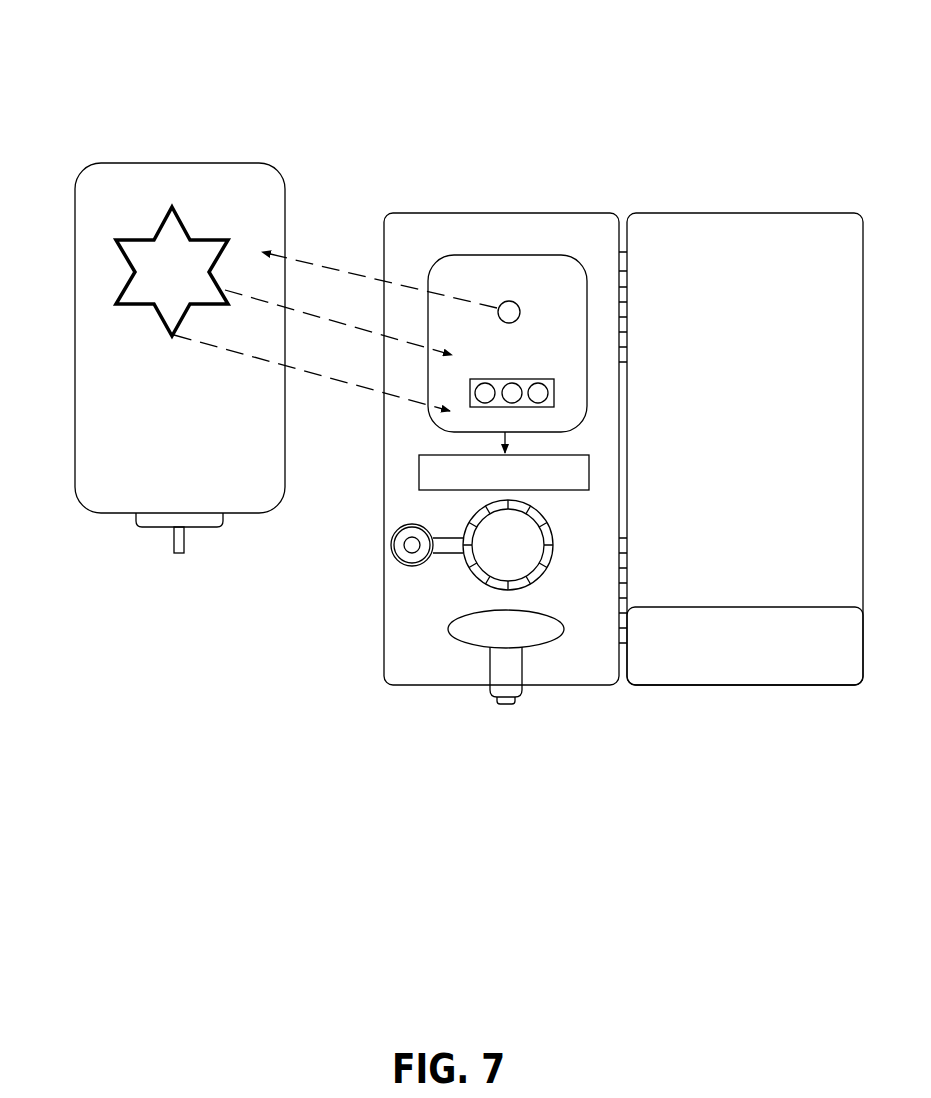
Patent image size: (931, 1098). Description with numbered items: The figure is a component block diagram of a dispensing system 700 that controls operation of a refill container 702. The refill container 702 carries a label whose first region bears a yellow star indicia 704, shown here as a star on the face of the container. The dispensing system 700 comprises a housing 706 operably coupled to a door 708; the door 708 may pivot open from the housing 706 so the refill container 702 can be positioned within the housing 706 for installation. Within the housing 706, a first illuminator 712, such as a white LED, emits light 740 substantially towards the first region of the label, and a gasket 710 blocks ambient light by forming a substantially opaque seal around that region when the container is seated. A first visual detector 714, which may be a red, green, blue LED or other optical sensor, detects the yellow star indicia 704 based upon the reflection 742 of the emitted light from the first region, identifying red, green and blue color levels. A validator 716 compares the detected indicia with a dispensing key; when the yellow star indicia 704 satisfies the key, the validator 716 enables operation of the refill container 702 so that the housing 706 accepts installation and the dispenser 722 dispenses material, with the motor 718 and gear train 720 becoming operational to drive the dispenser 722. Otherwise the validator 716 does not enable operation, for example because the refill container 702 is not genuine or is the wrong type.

The dispensing system 700 is at (684, 78).
The refill container 702 is at (212, 163).
The yellow star indicia 704 is at (185, 214).
The housing 706 is at (533, 213).
The door 708 is at (752, 213).
The gasket 710 is at (513, 255).
The first illuminator 712 is at (513, 301).
The first visual detector 714 is at (503, 379).
The validator 716 is at (419, 487).
The motor 718 is at (391, 546).
The gear train 720 is at (534, 581).
The dispenser 722 is at (534, 648).
The emitted light 740 is at (300, 261).
The reflection 742 is at (361, 389).